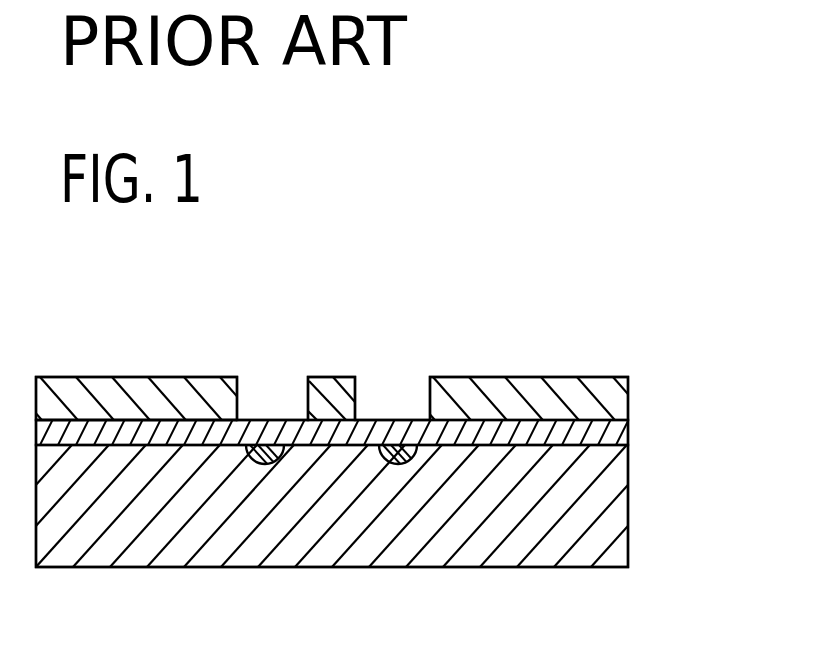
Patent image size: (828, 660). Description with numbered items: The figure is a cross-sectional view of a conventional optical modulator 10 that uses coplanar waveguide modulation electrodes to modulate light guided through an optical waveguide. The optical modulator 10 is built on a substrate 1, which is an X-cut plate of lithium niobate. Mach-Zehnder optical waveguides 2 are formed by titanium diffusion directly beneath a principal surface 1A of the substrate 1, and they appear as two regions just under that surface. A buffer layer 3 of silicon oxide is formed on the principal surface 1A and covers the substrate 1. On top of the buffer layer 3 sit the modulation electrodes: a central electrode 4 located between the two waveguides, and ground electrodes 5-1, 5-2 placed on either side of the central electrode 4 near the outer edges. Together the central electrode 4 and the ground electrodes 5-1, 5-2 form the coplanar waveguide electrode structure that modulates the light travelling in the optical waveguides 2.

The optical modulator 10 is at (720, 302).
The substrate 1 is at (610, 510).
The principal surface 1A is at (75, 400).
The Mach-Zehnder optical waveguides 2 is at (268, 464).
The buffer layer 3 is at (610, 432).
The central electrode 4 is at (330, 393).
The ground electrode 5-1 is at (172, 392).
The ground electrode 5-2 is at (515, 395).